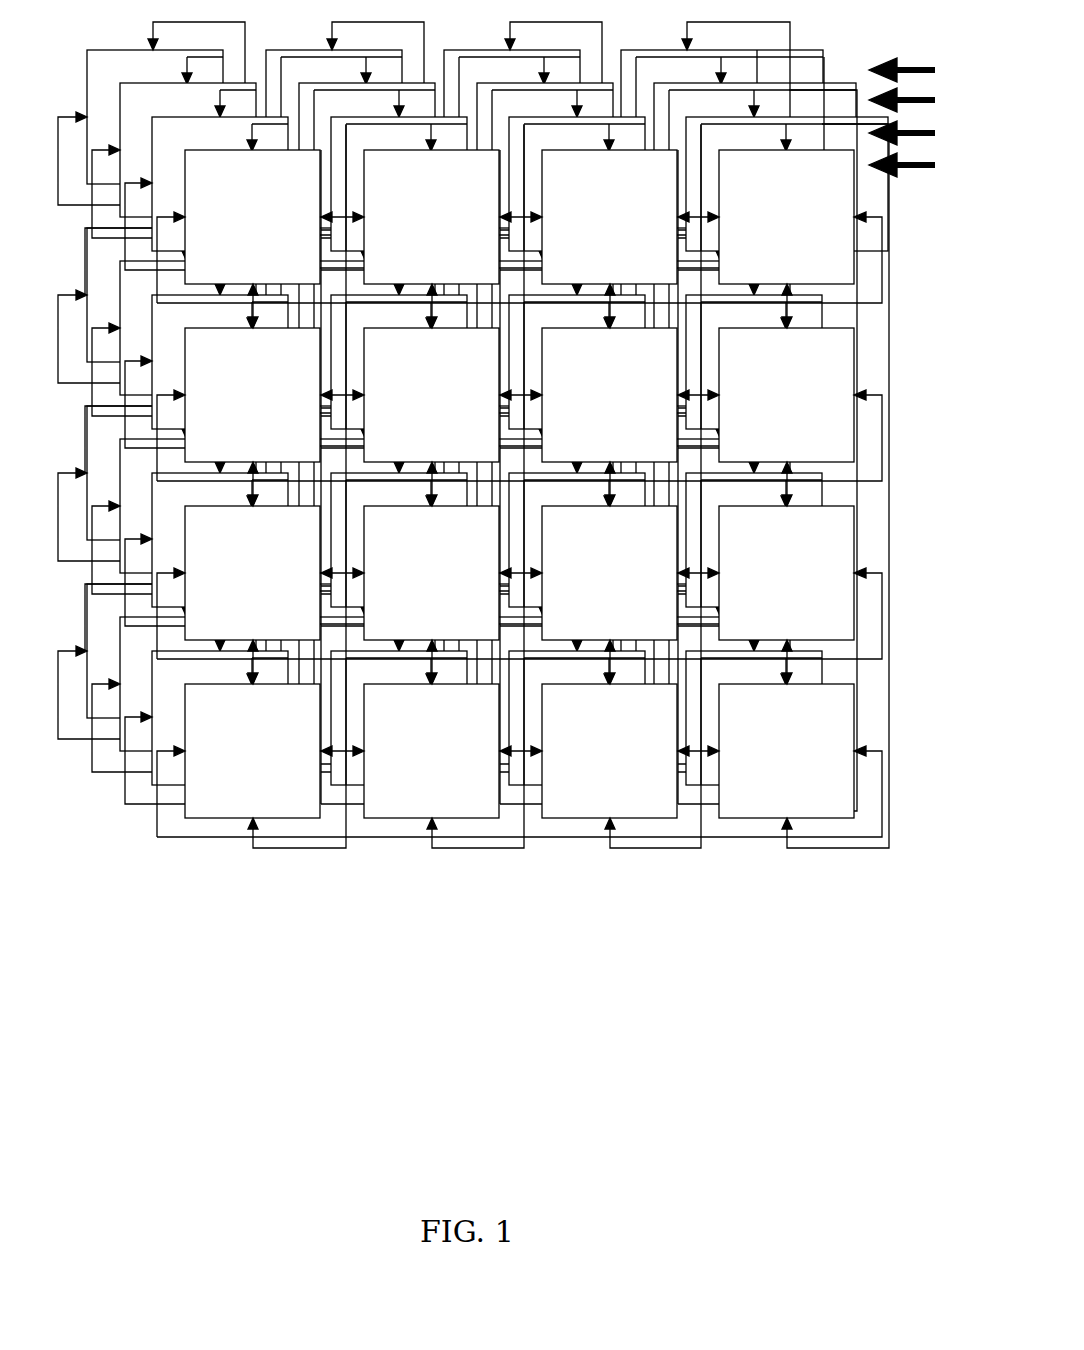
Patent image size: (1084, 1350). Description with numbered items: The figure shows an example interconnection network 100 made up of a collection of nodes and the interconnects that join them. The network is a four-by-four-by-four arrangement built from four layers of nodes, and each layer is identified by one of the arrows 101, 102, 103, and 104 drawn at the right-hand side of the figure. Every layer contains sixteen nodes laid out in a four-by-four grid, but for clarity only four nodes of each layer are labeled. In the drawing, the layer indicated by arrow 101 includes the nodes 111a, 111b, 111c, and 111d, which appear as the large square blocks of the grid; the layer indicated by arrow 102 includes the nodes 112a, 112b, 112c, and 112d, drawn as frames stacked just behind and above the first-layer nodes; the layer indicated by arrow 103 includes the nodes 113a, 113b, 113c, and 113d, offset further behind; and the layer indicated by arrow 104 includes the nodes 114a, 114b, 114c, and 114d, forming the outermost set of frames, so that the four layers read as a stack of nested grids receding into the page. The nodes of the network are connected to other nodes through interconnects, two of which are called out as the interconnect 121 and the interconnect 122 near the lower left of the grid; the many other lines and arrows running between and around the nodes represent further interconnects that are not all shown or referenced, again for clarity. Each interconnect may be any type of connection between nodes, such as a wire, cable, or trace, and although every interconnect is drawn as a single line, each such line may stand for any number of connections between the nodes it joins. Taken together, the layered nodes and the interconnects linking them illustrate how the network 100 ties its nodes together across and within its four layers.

The interconnection network 100 is at (515, 511).
The layer of nodes 101 is at (920, 165).
The layer of nodes 102 is at (920, 133).
The layer of nodes 103 is at (920, 100).
The layer of nodes 104 is at (920, 70).
The node 111a is at (252, 217).
The node 111b is at (431, 217).
The node 111c is at (609, 217).
The node 111d is at (786, 217).
The node 112a is at (220, 184).
The node 112b is at (399, 184).
The node 112c is at (577, 184).
The node 112d is at (787, 184).
The node 113a is at (188, 150).
The node 113b is at (367, 150).
The node 113c is at (545, 150).
The node 113d is at (755, 150).
The node 114a is at (155, 117).
The node 114b is at (334, 117).
The node 114c is at (512, 117).
The node 114d is at (722, 117).
The interconnect 121 is at (340, 808).
The interconnect 122 is at (152, 814).